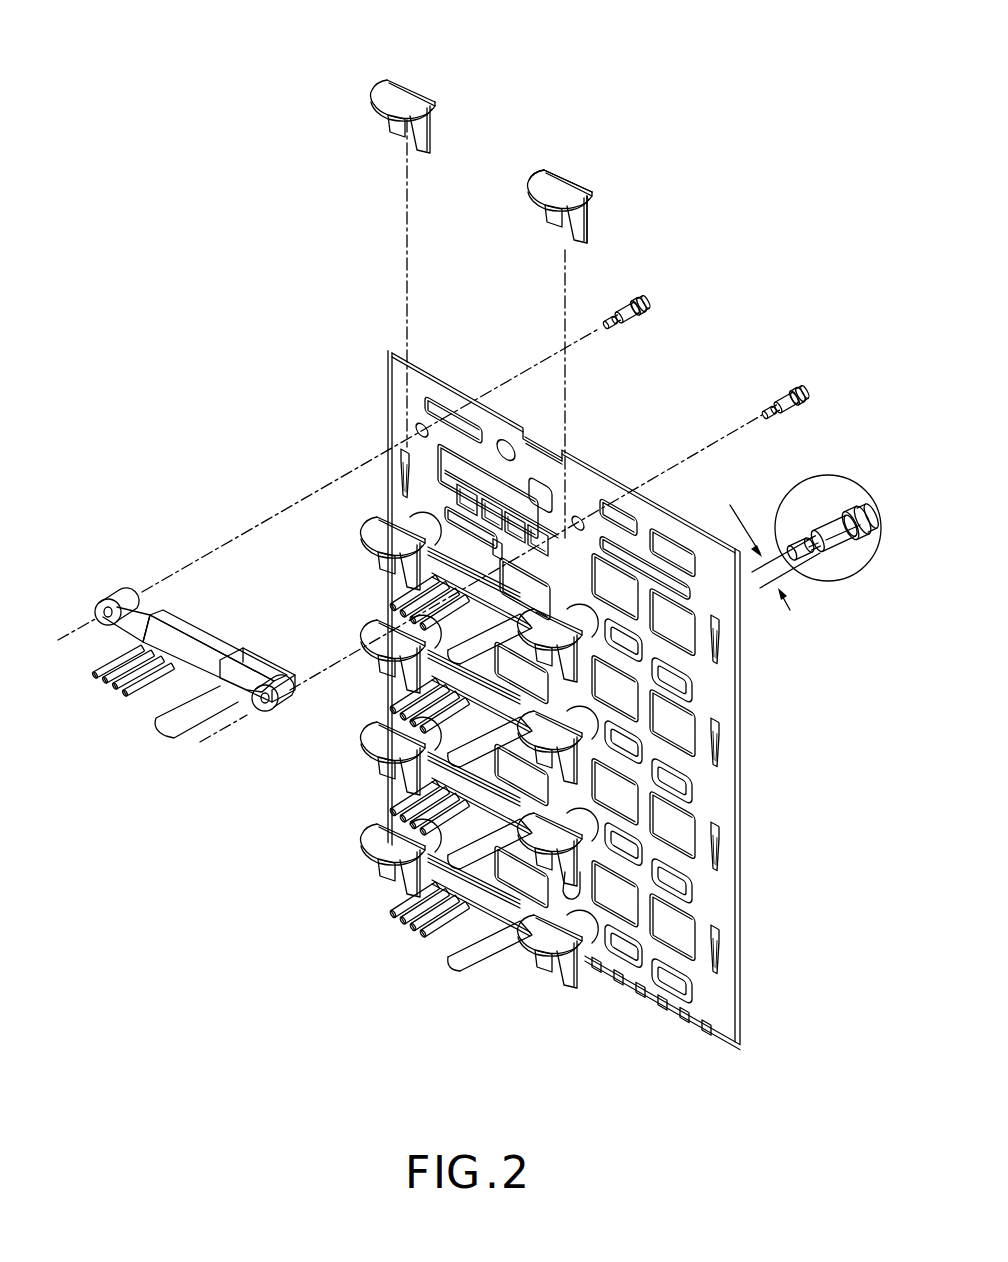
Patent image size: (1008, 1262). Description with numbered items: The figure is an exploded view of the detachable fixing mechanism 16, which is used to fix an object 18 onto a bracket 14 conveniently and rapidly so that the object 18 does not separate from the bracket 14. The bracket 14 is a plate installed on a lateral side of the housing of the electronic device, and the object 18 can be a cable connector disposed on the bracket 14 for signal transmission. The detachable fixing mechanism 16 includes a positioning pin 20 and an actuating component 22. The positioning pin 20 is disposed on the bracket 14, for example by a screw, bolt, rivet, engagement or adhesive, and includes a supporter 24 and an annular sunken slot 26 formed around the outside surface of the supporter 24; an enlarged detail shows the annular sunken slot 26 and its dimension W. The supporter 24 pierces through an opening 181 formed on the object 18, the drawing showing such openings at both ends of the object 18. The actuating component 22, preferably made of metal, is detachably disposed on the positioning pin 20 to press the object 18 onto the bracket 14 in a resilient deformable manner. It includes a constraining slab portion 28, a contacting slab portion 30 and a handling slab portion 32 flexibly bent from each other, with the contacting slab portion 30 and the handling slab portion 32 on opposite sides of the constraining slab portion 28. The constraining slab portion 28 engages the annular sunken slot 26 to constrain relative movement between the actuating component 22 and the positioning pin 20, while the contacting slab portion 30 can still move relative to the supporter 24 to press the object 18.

The bracket 14 is at (745, 833).
The detachable fixing mechanism 16 is at (305, 46).
The object 18 is at (222, 648).
The opening 181 is at (95, 602).
The positioning pin 20 is at (640, 296).
The actuating component 22 is at (392, 84).
The supporter 24 is at (835, 553).
The annular sunken slot 26 is at (812, 562).
The constraining slab portion 28 is at (580, 207).
The contacting slab portion 30 is at (578, 183).
The handling slab portion 32 is at (531, 185).